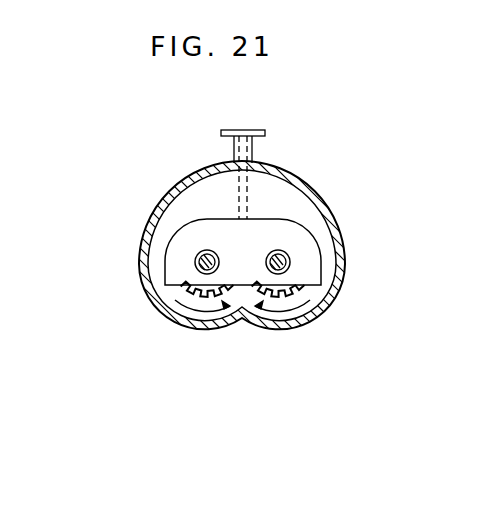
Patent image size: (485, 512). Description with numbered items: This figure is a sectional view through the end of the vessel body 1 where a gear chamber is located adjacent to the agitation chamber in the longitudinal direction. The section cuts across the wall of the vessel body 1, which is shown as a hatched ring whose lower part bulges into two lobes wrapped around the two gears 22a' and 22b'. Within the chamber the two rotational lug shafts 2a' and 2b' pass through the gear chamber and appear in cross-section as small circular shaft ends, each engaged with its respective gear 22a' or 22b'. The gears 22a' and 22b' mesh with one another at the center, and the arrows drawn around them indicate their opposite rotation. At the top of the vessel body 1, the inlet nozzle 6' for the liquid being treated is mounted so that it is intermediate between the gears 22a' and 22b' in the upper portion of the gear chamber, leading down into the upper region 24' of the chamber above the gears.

The vessel body 1 is at (158, 210).
The chamber 24' is at (241, 212).
The inlet nozzle 6' is at (243, 156).
The rotational lug shaft 2a' is at (146, 259).
The rotational lug shaft 2b' is at (328, 258).
The gear 22a' is at (205, 332).
The gear 22b' is at (290, 332).